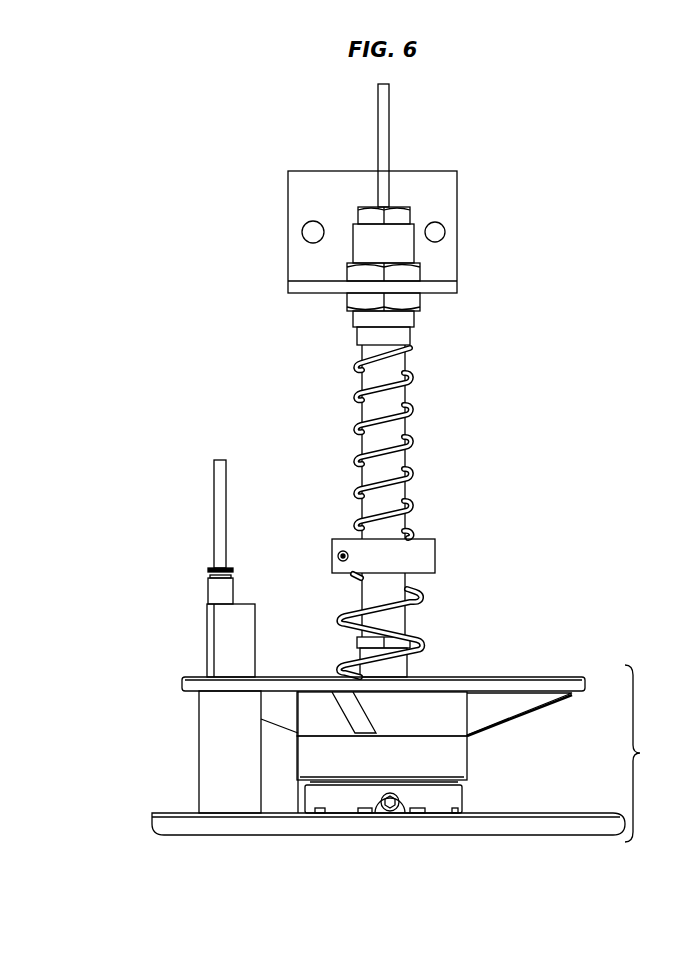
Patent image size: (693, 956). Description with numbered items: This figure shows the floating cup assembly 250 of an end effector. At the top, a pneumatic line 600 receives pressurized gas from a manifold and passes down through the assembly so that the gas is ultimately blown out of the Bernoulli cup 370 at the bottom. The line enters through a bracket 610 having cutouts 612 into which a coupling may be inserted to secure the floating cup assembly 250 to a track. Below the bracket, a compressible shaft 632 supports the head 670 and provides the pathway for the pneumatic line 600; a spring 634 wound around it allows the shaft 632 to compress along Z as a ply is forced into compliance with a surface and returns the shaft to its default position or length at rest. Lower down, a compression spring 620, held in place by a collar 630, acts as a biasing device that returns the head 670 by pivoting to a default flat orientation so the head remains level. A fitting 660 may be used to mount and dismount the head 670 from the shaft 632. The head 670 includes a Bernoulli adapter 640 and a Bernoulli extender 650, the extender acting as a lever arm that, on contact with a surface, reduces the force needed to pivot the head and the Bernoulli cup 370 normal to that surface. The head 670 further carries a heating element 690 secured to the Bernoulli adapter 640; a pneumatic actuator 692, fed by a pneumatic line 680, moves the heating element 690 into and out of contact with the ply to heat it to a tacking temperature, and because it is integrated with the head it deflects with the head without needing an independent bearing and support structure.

The pneumatic line 600 is at (389, 114).
The bracket 610 is at (437, 171).
The cutouts 612 is at (445, 232).
The floating cup assembly 250 is at (562, 402).
The shaft 632 is at (400, 393).
The spring 634 is at (410, 469).
The collar 630 is at (430, 553).
The compression spring 620 is at (420, 630).
The fitting 660 is at (402, 666).
The Bernoulli adapter 640 is at (561, 676).
The heating element 690 is at (215, 763).
The head 670 is at (655, 753).
The Bernoulli extender 650 is at (590, 812).
The Bernoulli cup 370 is at (450, 800).
The pneumatic line 680 is at (218, 498).
The pneumatic actuator 692 is at (210, 625).